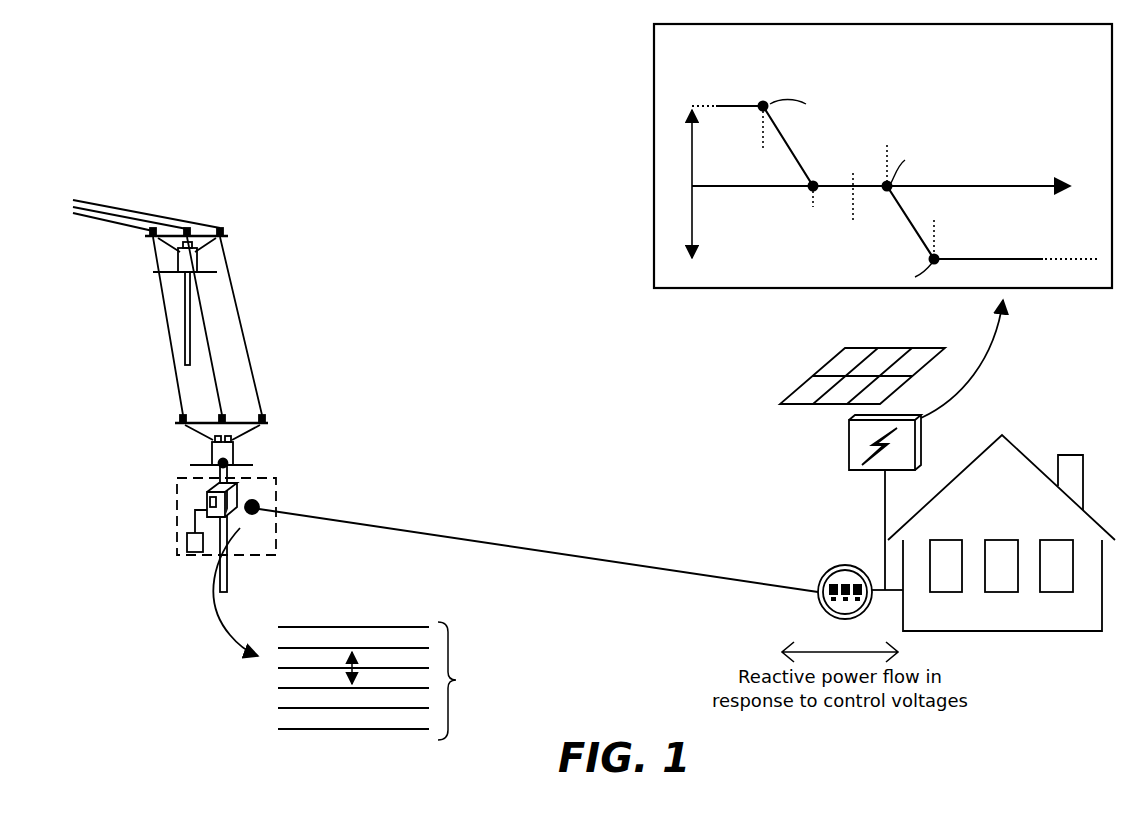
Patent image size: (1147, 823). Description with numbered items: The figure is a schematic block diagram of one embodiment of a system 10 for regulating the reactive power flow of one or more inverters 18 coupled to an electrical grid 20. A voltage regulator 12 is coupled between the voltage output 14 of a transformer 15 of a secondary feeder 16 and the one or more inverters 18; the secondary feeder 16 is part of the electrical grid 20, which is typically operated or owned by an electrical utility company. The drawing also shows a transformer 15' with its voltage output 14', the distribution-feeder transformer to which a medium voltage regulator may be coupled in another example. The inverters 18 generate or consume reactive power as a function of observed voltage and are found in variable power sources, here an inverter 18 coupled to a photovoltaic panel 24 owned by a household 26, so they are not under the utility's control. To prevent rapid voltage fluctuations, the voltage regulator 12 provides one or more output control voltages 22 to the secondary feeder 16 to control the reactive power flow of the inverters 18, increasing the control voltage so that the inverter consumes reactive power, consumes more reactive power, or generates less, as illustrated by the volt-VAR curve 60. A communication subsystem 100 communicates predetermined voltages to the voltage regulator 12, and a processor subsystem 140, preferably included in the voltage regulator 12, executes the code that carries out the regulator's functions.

The electrical grid 20 is at (300, 207).
The transformer 15' is at (151, 257).
The voltage output 14' is at (136, 318).
The transformer 15 is at (183, 450).
The voltage output 14 is at (171, 526).
The system 10 is at (177, 542).
The processor subsystem 140 is at (207, 498).
The communication subsystem 100 is at (191, 553).
The voltage regulator 12 is at (258, 503).
The secondary feeder 16 is at (390, 521).
The output control voltages 22 is at (464, 681).
The photovoltaic panel 24 is at (840, 360).
The inverters 18 is at (862, 470).
The household 26 is at (1001, 533).
The volt-VAR curve 60 is at (977, 96).